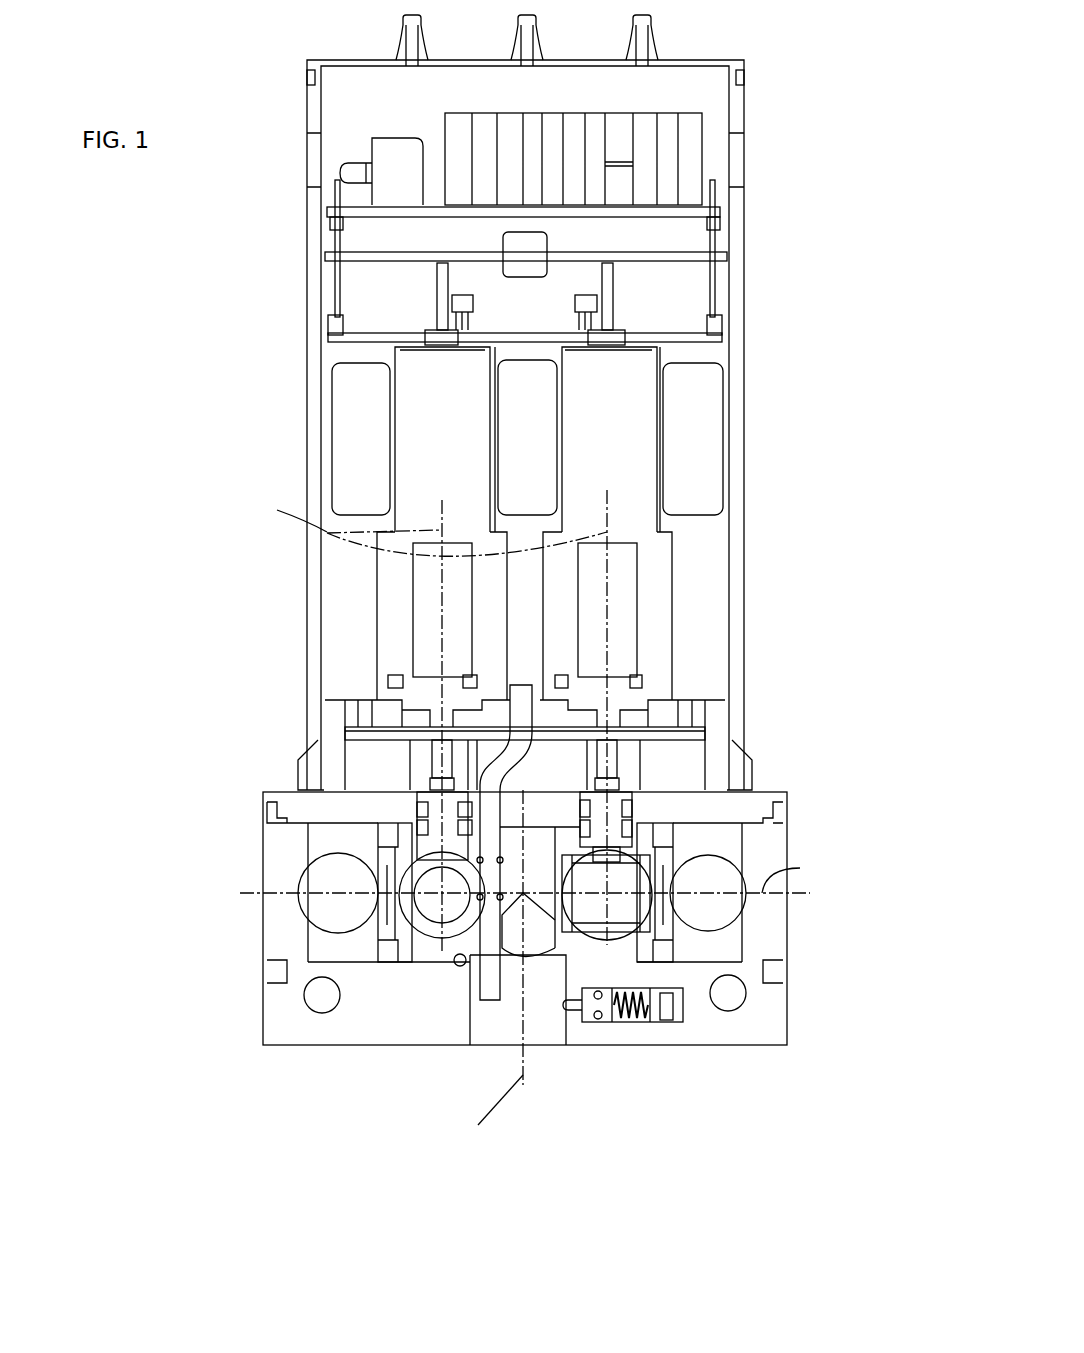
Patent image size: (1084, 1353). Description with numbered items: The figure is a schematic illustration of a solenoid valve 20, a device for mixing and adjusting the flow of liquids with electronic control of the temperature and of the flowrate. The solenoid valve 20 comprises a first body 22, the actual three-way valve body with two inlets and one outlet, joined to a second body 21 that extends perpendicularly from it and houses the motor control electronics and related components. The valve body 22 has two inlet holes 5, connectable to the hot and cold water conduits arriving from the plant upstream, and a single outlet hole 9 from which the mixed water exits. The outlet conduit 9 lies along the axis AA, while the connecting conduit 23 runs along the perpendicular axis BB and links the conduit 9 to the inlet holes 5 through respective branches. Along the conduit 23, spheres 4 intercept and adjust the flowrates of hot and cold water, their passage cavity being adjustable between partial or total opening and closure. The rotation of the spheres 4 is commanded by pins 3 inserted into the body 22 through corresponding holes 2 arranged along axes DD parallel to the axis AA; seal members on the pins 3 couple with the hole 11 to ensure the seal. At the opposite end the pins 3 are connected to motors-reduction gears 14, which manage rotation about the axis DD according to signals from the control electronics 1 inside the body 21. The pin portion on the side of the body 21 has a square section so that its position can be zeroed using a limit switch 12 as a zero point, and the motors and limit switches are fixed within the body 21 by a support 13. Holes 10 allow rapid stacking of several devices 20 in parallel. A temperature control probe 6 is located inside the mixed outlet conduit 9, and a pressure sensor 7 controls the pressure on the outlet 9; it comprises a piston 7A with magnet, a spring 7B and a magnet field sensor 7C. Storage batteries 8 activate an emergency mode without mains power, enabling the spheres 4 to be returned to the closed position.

The control electronics 1 is at (657, 326).
The holes 2 is at (427, 795).
The pins 3 is at (430, 825).
The spheres 4 is at (410, 870).
The inlet holes 5 is at (351, 905).
The temperature control probe 6 is at (492, 990).
The pressure sensor 7 is at (658, 1123).
The piston with magnet 7A is at (602, 1008).
The spring 7B is at (633, 1018).
The magnet field sensor 7C is at (670, 1003).
The storage batteries 8 is at (695, 440).
The outlet hole 9 is at (492, 1032).
The holes 10 is at (806, 950).
The hole 11 is at (395, 848).
The limit switch 12 is at (350, 756).
The support 13 is at (333, 712).
The motors-reduction gears 14 is at (387, 587).
The solenoid valve 20 is at (236, 379).
The second body 21 is at (743, 372).
The first body 22 is at (748, 1023).
The connecting conduit 23 is at (528, 914).